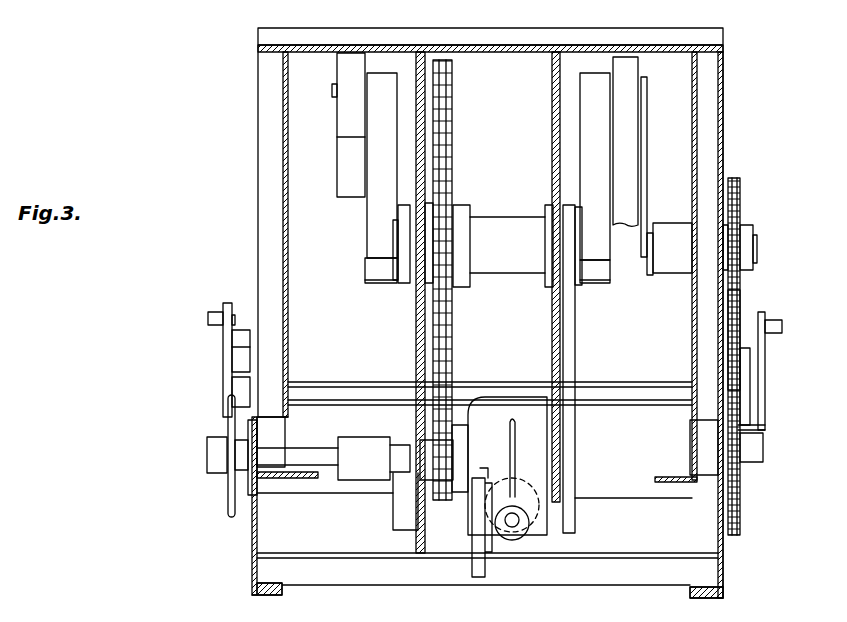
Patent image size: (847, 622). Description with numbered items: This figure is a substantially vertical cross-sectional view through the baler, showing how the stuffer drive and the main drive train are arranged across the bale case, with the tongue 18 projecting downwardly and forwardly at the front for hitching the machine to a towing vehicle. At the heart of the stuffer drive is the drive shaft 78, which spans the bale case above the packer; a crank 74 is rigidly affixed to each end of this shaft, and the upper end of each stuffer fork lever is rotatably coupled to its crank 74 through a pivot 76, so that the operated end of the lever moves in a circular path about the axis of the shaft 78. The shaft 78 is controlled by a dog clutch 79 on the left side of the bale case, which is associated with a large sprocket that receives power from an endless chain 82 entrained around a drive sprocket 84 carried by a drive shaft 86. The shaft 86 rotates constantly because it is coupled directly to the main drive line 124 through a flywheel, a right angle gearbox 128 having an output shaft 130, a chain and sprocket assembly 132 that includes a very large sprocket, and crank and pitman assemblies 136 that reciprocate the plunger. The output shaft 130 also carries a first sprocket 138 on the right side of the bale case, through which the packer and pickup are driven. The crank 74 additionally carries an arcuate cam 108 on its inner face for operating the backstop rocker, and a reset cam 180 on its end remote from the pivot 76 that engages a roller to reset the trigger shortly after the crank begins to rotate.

The tongue 18 is at (250, 540).
The crank 74 is at (225, 385).
The pivot 76 is at (208, 318).
The drive shaft 78 is at (610, 392).
The dog clutch 79 is at (752, 365).
The endless chain 82 is at (740, 290).
The drive sprocket 84 is at (740, 190).
The drive shaft 86 is at (757, 240).
The arcuate cam 108 is at (233, 338).
The main drive line 124 is at (512, 535).
The right angle gearbox 128 is at (535, 437).
The output shaft 130 is at (303, 452).
The chain and sprocket assembly 132 is at (452, 345).
The crank and pitman assemblies 136 is at (360, 205).
The first sprocket 138 is at (225, 490).
The reset cam 180 is at (753, 450).